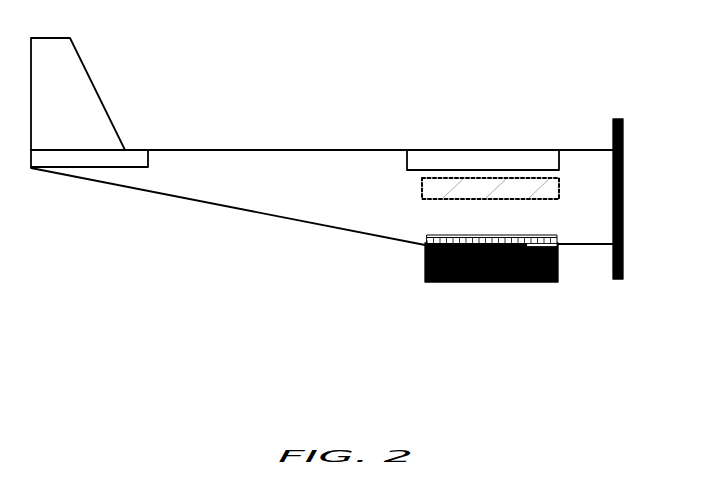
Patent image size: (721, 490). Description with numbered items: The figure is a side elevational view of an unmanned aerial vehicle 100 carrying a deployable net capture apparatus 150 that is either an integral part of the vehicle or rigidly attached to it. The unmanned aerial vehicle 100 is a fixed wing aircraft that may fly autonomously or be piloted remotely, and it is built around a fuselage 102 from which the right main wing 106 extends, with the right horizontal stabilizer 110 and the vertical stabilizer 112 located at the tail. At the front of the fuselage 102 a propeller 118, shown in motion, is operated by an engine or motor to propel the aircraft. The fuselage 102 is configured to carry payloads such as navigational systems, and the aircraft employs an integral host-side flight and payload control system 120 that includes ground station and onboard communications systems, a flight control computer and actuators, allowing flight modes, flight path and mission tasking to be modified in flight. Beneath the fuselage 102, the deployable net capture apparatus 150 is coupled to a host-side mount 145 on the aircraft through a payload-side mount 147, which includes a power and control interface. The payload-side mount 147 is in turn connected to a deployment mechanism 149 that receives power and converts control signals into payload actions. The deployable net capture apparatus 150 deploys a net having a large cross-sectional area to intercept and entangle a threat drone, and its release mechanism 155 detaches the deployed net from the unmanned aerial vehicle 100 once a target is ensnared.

The unmanned aerial vehicle 100 is at (318, 42).
The fuselage 102 is at (262, 213).
The right main wing 106 is at (457, 160).
The right horizontal stabilizer 110 is at (92, 167).
The vertical stabilizer 112 is at (98, 91).
The propeller 118 is at (623, 168).
The host-side flight and payload control system 120 is at (426, 194).
The host-side mount 145 is at (558, 237).
The payload-side mount 147 is at (558, 241).
The deployment mechanism 149 is at (428, 241).
The deployable net capture apparatus 150 is at (500, 283).
The release mechanism 155 is at (558, 245).